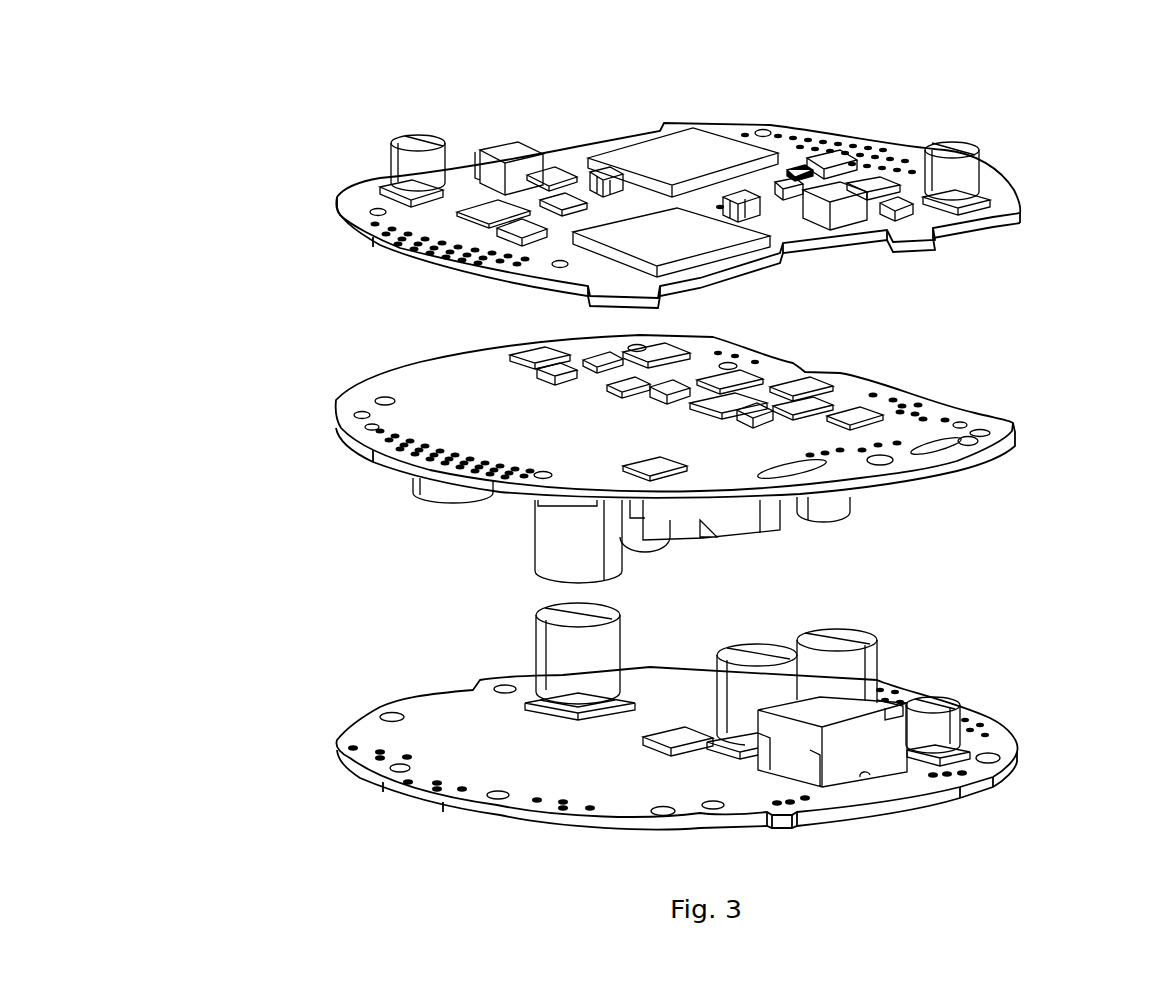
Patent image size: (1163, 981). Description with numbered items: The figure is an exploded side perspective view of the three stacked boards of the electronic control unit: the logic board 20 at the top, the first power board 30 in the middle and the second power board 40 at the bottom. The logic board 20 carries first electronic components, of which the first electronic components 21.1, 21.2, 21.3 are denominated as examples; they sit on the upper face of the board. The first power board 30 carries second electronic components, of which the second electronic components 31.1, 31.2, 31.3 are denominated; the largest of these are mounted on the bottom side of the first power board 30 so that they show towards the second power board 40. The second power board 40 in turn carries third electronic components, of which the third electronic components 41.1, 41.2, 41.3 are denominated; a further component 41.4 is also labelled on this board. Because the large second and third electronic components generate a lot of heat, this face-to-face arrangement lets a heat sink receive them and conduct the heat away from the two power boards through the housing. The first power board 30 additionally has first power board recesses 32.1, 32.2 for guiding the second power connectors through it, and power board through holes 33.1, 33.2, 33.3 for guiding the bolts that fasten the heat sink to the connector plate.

The logic board 20 is at (335, 210).
The first electronic component 21.1 is at (968, 150).
The first electronic component 21.2 is at (521, 150).
The first electronic component 21.3 is at (415, 140).
The first power board 30 is at (335, 420).
The second electronic component 31.1 is at (535, 543).
The second electronic component 31.2 is at (638, 542).
The second electronic component 31.3 is at (815, 517).
The first power board recess 32.1 is at (795, 467).
The first power board recess 32.2 is at (985, 448).
The power board through hole 33.1 is at (923, 465).
The power board through hole 33.2 is at (372, 398).
The power board through hole 33.3 is at (628, 350).
The second power board 40 is at (335, 768).
The third electronic component 41.1 is at (878, 655).
The third electronic component 41.2 is at (843, 767).
The third electronic component 41.3 is at (735, 650).
The capacitor 41.4 is at (535, 645).